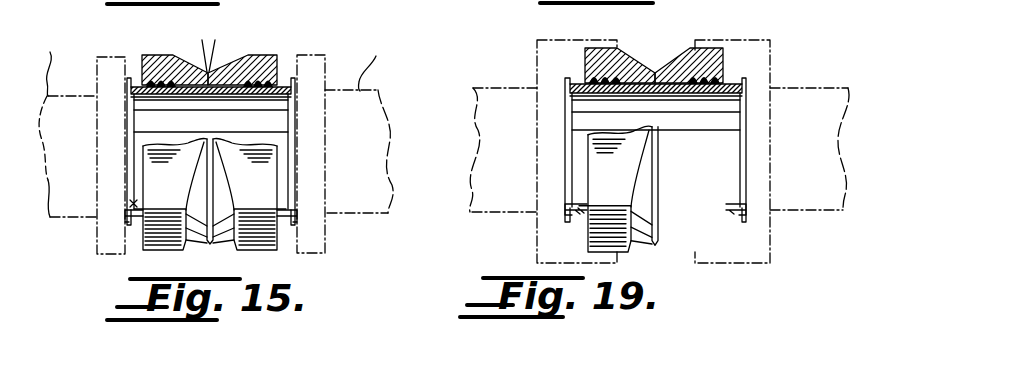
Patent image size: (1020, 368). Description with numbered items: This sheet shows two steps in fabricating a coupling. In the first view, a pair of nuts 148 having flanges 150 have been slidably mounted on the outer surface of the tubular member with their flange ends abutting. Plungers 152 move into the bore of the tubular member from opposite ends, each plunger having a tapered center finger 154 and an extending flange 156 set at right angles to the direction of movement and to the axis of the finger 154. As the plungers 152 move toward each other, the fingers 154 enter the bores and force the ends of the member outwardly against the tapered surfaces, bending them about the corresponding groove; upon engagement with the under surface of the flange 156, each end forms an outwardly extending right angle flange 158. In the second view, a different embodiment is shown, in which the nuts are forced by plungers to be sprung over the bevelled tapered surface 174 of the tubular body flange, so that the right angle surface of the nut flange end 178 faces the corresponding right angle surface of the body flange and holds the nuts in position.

In FIG. 15, the nuts 148 is at (162, 62).
In FIG. 15, the flanges 150 is at (207, 44).
In FIG. 15, the plungers 152 is at (216, 123).
In FIG. 15, the tapered center finger 154 is at (133, 216).
In FIG. 15, the extending flange 156 is at (95, 228).
In FIG. 15, the right angle flange 158 is at (292, 80).
In FIG. 19, the bevelled outer edge 174 is at (565, 78).
In FIG. 19, the flange end 178 is at (642, 63).